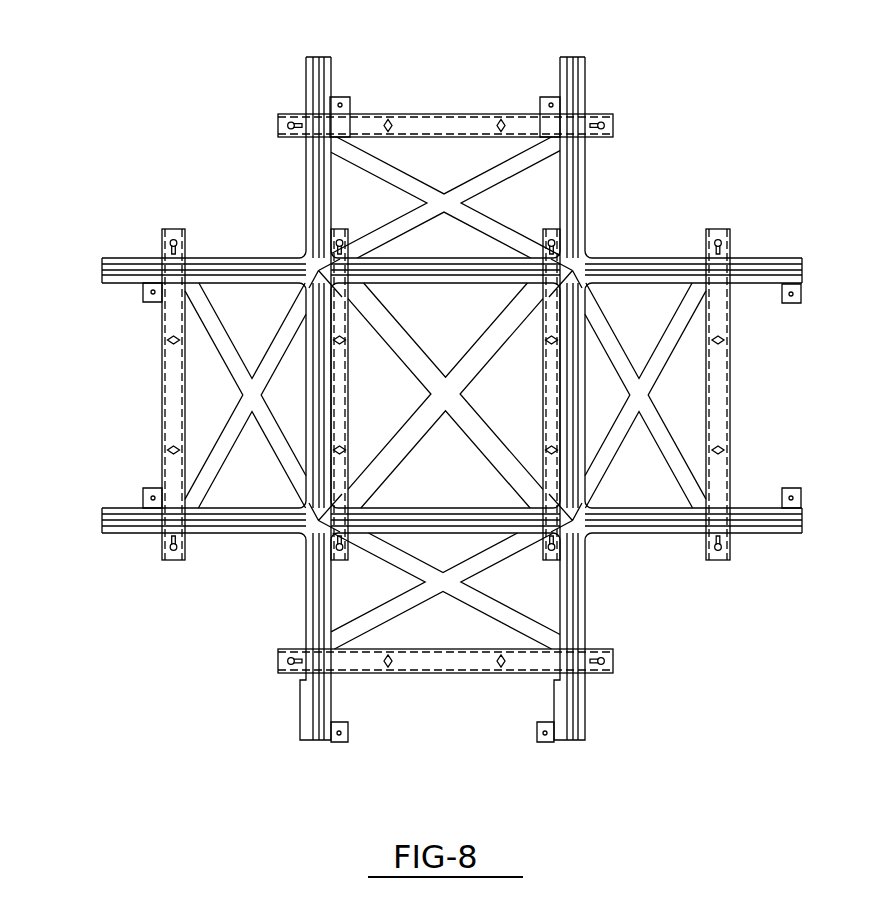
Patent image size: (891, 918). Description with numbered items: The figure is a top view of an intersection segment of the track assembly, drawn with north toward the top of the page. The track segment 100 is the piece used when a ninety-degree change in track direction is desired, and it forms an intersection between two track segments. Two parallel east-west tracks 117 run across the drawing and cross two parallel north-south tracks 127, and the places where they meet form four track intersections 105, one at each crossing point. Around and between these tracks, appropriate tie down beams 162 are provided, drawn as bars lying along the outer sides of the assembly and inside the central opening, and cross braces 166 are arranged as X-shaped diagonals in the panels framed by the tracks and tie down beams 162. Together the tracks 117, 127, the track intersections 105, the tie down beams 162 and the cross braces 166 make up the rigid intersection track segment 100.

The track segment 100 is at (856, 55).
The track intersections 105 is at (310, 265).
The east-west tracks 117 is at (195, 257).
The north-south tracks 127 is at (308, 162).
The tie down beams 162 is at (440, 122).
The cross braces 166 is at (433, 197).